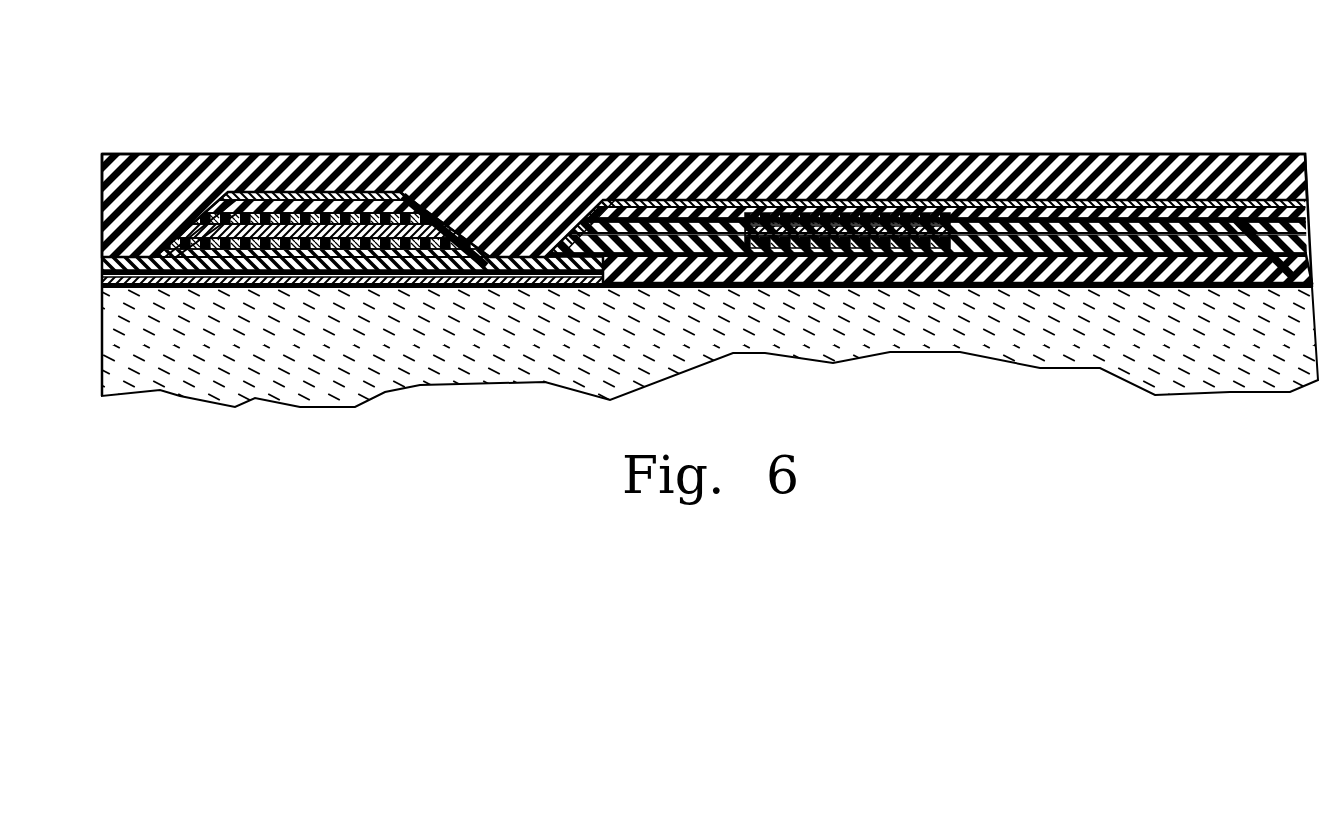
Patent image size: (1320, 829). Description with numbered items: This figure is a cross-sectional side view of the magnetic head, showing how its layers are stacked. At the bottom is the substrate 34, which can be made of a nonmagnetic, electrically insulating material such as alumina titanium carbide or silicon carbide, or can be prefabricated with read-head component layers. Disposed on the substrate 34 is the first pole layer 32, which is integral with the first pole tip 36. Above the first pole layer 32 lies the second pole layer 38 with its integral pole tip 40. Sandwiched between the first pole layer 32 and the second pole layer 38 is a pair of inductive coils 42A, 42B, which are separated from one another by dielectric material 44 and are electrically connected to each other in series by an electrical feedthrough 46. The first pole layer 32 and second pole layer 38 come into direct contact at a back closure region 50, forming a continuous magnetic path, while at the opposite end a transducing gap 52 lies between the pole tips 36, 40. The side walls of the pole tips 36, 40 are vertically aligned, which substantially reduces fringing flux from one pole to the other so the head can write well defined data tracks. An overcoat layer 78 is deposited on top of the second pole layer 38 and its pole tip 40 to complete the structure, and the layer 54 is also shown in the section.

The first pole layer 32 is at (178, 288).
The substrate 34 is at (940, 335).
The first pole tip 36 is at (102, 286).
The second pole layer 38 is at (292, 200).
The second pole tip 40 is at (102, 261).
The inductive coil 42A is at (432, 207).
The inductive coil 42B is at (482, 212).
The dielectric material 44 is at (1042, 215).
The electrical feedthrough 46 is at (720, 200).
The back closure region 50 is at (560, 238).
The transducing gap 52 is at (102, 277).
The passivation layer 54 is at (102, 185).
The overcoat layer 78 is at (1197, 168).